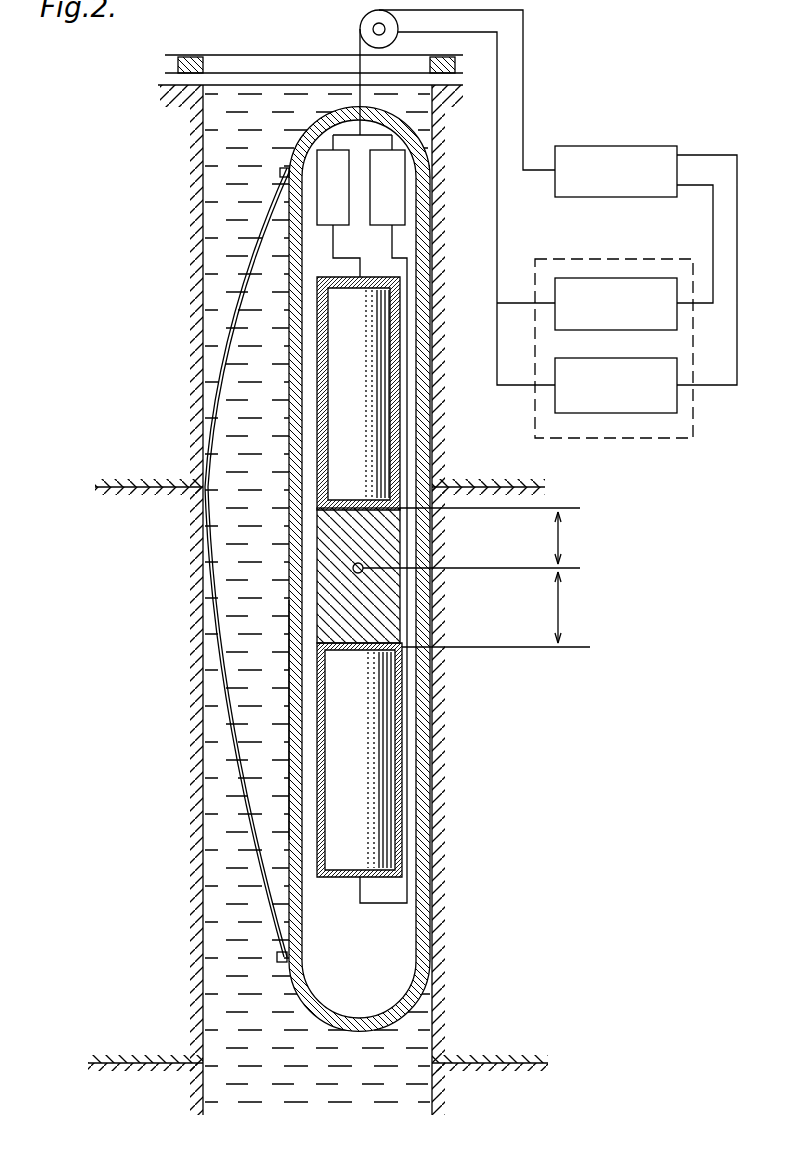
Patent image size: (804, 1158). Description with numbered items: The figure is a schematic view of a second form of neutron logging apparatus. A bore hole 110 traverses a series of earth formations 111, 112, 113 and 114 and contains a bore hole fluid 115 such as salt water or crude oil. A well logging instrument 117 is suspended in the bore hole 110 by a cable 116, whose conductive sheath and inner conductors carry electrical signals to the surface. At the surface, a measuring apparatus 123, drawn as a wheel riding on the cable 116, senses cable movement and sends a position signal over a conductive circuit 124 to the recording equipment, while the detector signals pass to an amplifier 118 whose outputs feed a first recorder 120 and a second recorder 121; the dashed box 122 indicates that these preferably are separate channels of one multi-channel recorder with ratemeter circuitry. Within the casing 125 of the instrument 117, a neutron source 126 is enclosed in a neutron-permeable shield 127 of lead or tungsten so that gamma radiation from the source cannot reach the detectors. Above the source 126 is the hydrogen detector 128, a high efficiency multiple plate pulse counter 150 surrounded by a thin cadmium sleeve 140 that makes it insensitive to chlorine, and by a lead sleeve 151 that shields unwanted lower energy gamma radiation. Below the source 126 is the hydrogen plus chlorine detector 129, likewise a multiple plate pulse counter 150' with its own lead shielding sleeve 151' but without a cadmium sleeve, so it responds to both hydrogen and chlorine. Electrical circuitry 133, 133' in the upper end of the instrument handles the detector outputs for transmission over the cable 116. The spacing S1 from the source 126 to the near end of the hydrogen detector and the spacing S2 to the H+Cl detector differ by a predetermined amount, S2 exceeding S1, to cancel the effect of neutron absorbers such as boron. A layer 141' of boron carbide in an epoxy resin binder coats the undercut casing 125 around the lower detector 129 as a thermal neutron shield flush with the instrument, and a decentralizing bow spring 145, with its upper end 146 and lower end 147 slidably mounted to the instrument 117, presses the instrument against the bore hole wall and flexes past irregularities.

The bore hole 110 is at (212, 60).
The earth formation 111 is at (196, 56).
The earth formation 112 is at (137, 216).
The earth formation 113 is at (127, 763).
The earth formation 114 is at (127, 1108).
The bore hole fluid 115 is at (230, 141).
The cable 116 is at (360, 40).
The well logging instrument 117 is at (367, 562).
The amplifier 118 is at (598, 146).
The recorder 120 is at (635, 278).
The recorder 121 is at (630, 358).
The multi-channel recorder 122 is at (574, 258).
The measuring apparatus 123 is at (363, 20).
The conductive circuit 124 is at (497, 209).
The casing 125 is at (421, 144).
The neutron source 126 is at (362, 563).
The neutron-permeable shield 127 is at (331, 583).
The hydrogen detector 128 is at (410, 387).
The hydrogen plus chlorine detector 129 is at (410, 765).
The electrical circuitry 133 is at (333, 187).
The electrical circuitry 133' is at (387, 187).
The cadmium sleeve 140 is at (379, 445).
The boron carbide layer 141' is at (262, 720).
The decentralizing bow spring 145 is at (262, 865).
The upper end of bow spring 146 is at (285, 160).
The lower end of bow spring 147 is at (278, 956).
The multiple plate pulse counter 150 is at (402, 393).
The multiple plate pulse counter 150' is at (408, 760).
The lead sleeve 151 is at (401, 393).
The lead shielding sleeve 151' is at (408, 760).
The source-to-hydrogen-detector spacing S1 is at (471, 538).
The source-to-H+Cl-detector spacing S2 is at (496, 609).